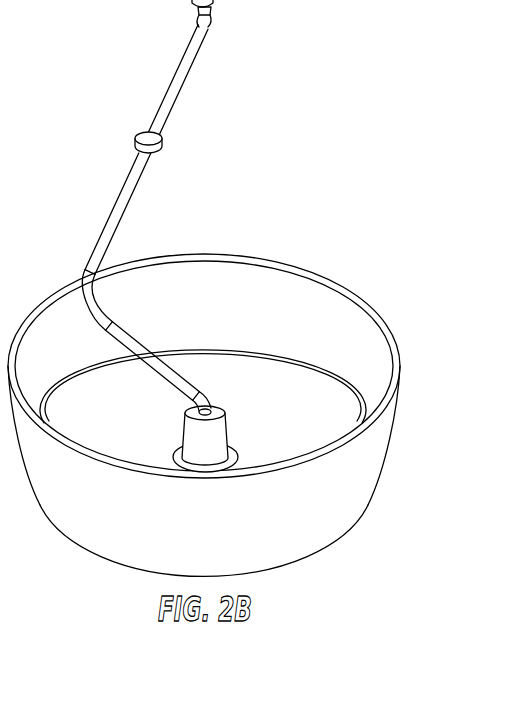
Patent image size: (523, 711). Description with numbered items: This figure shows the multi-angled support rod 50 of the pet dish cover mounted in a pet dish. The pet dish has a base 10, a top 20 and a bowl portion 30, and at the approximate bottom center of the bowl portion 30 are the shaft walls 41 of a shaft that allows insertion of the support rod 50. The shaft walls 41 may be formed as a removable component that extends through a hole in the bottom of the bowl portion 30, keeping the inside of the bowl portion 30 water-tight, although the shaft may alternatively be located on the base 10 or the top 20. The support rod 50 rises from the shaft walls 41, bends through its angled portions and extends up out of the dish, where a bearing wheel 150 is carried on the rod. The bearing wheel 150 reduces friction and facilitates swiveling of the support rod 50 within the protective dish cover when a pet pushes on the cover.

The base 10 is at (280, 567).
The top 20 is at (283, 262).
The bowl portion 30 is at (188, 302).
The shaft walls 41 is at (213, 437).
The support rod 50 is at (118, 176).
The bearing wheel 150 is at (161, 143).